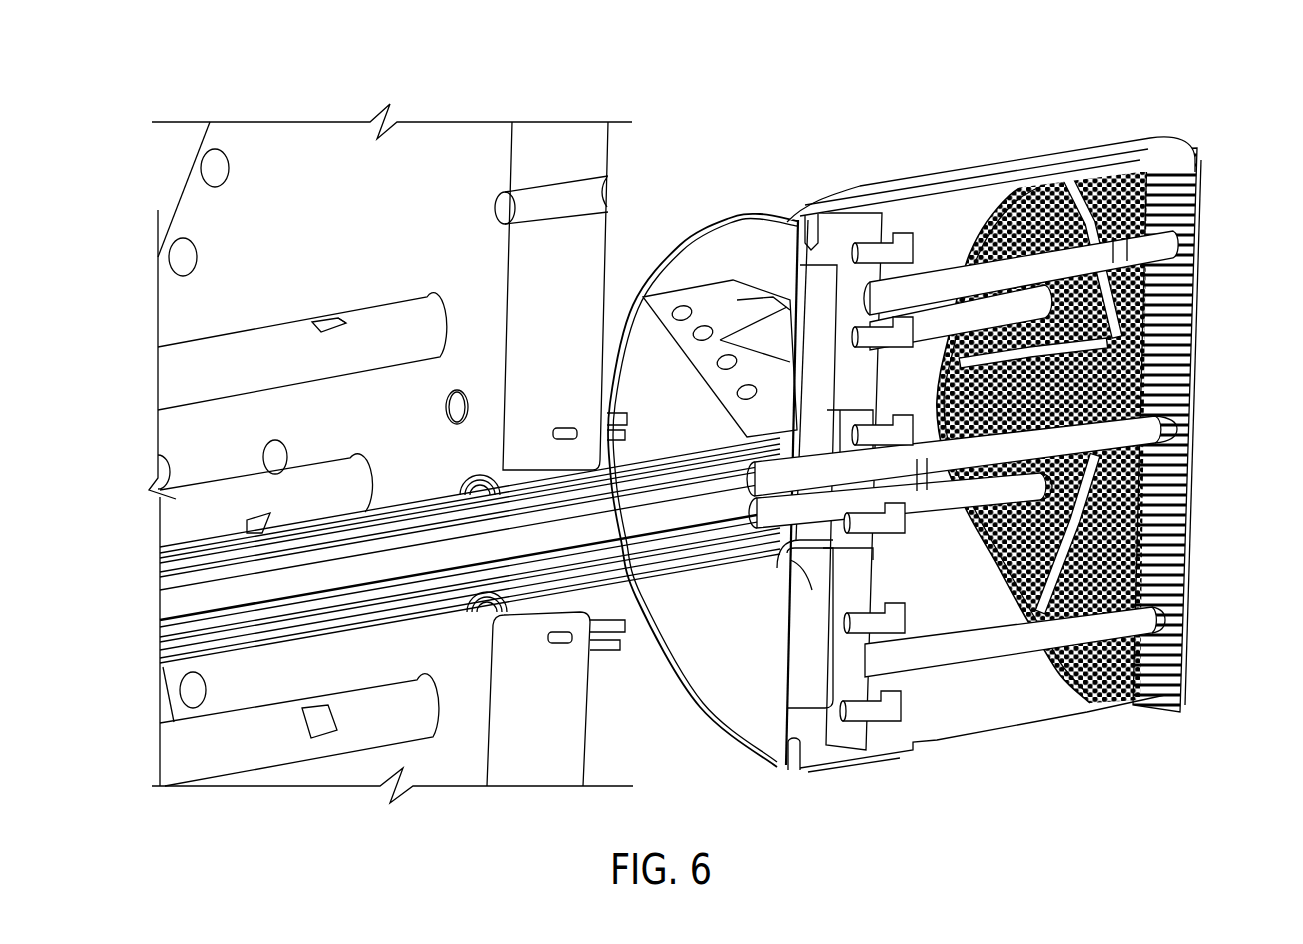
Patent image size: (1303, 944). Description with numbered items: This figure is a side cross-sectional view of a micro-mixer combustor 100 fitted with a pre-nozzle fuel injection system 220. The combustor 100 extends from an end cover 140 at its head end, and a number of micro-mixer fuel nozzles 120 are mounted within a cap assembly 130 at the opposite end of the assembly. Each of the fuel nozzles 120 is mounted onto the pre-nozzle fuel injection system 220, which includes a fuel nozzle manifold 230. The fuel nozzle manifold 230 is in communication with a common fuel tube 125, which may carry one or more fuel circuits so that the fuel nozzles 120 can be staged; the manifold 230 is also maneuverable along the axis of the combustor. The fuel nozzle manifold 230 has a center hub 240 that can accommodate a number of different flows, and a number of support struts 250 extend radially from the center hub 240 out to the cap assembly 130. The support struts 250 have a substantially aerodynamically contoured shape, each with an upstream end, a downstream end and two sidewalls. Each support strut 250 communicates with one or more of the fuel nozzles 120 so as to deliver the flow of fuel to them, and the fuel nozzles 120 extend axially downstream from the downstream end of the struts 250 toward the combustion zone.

The combustor 100 is at (158, 57).
The micro-mixer fuel nozzles 120 is at (1193, 188).
The common fuel tube 125 is at (652, 587).
The cap assembly 130 is at (1070, 150).
The end cover 140 is at (190, 161).
The pre-nozzle fuel injection system 220 is at (667, 282).
The fuel nozzle manifold 230 is at (780, 563).
The center hub 240 is at (805, 570).
The support struts 250 is at (797, 233).